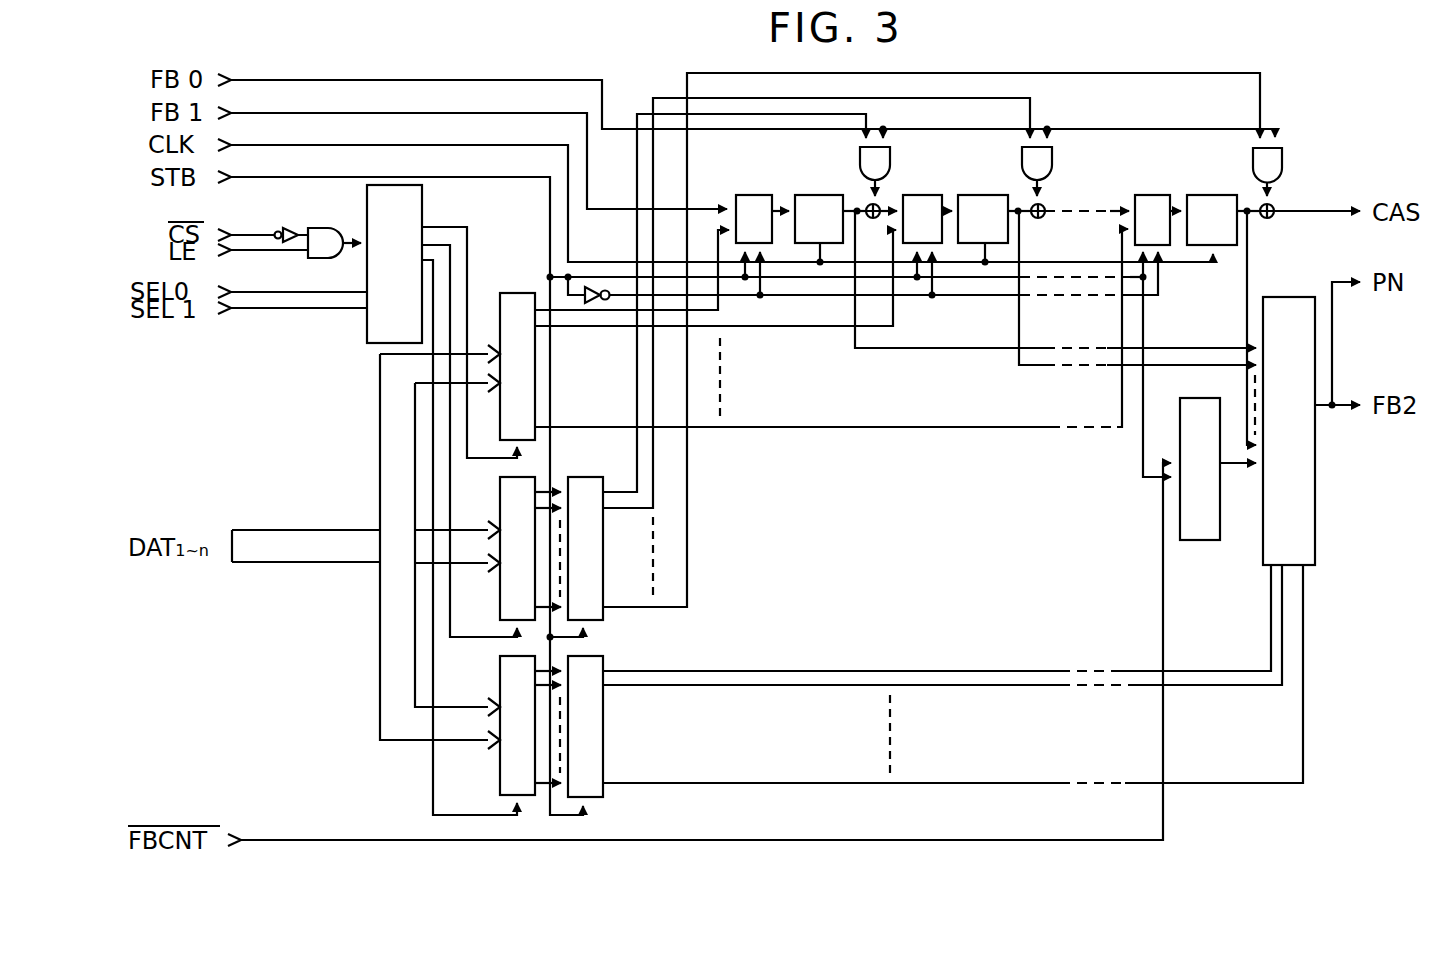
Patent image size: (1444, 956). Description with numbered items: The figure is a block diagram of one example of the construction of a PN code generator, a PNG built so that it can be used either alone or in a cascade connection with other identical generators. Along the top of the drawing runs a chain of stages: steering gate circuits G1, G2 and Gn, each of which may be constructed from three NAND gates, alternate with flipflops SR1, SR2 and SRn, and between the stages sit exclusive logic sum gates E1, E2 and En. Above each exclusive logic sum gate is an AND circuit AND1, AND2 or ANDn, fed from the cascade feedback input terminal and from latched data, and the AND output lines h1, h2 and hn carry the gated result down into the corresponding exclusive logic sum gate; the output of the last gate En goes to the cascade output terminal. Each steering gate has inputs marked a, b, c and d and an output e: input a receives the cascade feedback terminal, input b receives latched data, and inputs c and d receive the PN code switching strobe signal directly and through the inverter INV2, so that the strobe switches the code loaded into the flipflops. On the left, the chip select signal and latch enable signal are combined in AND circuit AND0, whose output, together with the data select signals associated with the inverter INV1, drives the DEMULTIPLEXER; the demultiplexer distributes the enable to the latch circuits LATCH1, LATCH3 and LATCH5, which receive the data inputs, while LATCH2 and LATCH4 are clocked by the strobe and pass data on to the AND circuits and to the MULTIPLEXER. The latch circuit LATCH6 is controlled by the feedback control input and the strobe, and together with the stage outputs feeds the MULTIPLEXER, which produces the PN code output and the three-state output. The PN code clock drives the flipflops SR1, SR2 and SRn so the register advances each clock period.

The AND circuit AND0 is at (315, 221).
The AND circuit AND1 is at (891, 158).
The AND circuit AND2 is at (1053, 158).
The AND circuit ANDn is at (1283, 160).
The inverter INV1 is at (276, 280).
The inverter INV2 is at (592, 285).
The steering gate circuit G1 is at (755, 219).
The steering gate circuit G2 is at (922, 219).
The steering gate circuit Gn is at (1153, 220).
The flipflop SR1 is at (820, 219).
The flipflop SR2 is at (983, 219).
The flipflop SRn is at (1212, 220).
The exclusive logic sum gate E1 is at (870, 226).
The exclusive logic sum gate E2 is at (1030, 226).
The exclusive logic sum gate En is at (1261, 227).
The AND gate 1 output line h1 is at (876, 190).
The AND gate 2 output line h2 is at (1038, 190).
The AND gate n output line hn is at (1268, 191).
The latch circuit LATCH1 is at (517, 366).
The latch circuit LATCH2 is at (585, 548).
The latch circuit LATCH3 is at (517, 548).
The latch circuit LATCH4 is at (585, 726).
The latch circuit LATCH5 is at (517, 725).
The latch circuit LATCH6 is at (1200, 469).
The demultiplexer DEMULTIPLEXER is at (394, 264).
The multiplexer MULTIPLEXER is at (1289, 431).
The gate input a is at (479, 161).
The gate input b is at (831, 323).
The gate input c is at (848, 260).
The gate input d is at (884, 269).
The gate output e is at (781, 197).